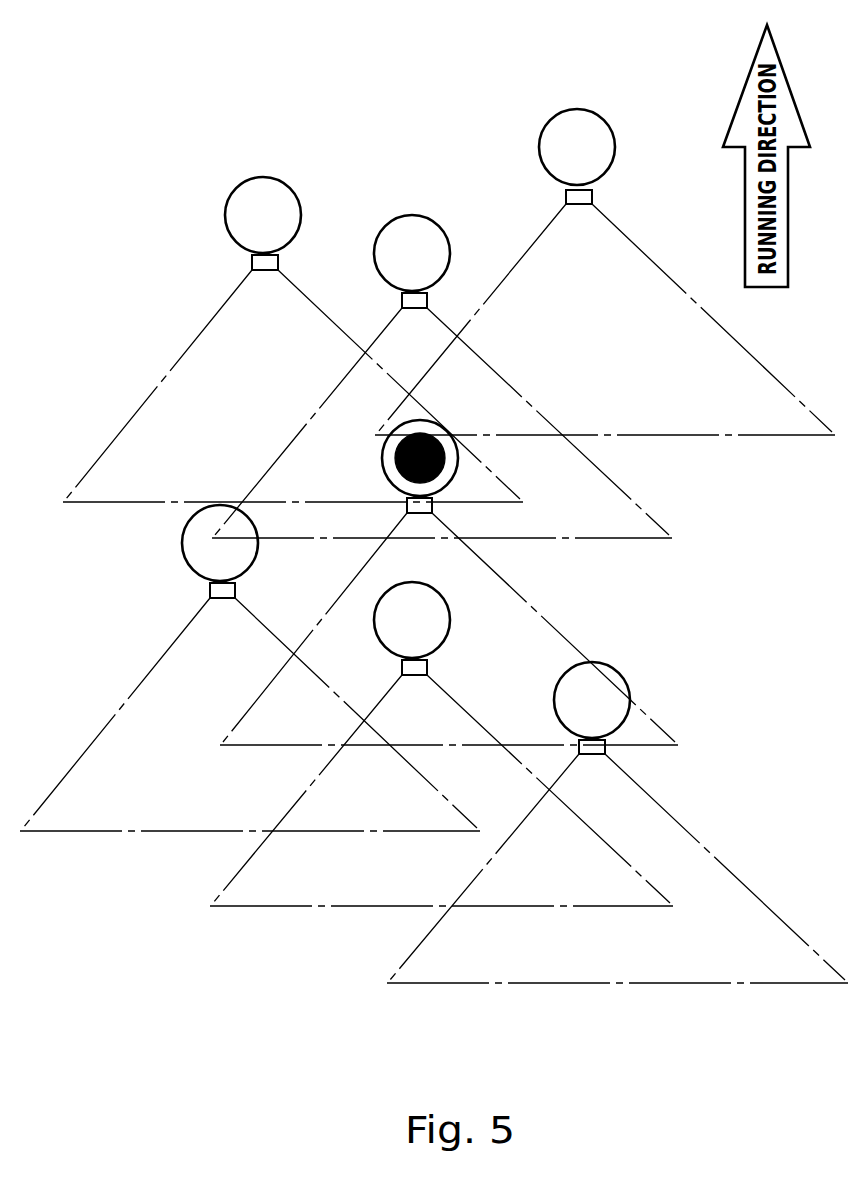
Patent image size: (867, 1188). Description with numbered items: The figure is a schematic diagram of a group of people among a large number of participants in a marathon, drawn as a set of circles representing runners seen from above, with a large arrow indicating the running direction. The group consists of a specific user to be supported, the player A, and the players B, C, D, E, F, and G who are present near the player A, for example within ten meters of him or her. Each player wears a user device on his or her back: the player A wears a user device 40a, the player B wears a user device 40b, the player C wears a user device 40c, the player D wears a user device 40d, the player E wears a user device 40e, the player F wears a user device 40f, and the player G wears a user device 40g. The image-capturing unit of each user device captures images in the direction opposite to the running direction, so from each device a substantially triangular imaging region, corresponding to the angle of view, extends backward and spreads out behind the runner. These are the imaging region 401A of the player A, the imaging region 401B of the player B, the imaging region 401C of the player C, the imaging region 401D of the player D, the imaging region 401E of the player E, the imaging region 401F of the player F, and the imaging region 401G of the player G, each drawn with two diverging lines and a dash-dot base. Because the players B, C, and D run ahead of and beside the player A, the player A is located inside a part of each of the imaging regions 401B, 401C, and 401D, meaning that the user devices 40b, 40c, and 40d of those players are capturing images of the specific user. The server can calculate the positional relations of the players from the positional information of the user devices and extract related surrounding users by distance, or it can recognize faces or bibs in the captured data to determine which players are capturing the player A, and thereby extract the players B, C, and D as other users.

The player A is at (456, 444).
The player B is at (300, 205).
The player C is at (449, 243).
The player D is at (614, 150).
The player E is at (258, 553).
The player F is at (450, 620).
The player G is at (627, 693).
The user device 40a is at (433, 505).
The user device 40b is at (279, 262).
The user device 40c is at (428, 299).
The user device 40d is at (593, 197).
The user device 40e is at (236, 590).
The user device 40f is at (428, 665).
The user device 40g is at (606, 745).
The imaging region 401A is at (505, 582).
The imaging region 401B is at (150, 398).
The imaging region 401C is at (613, 482).
The imaging region 401D is at (713, 318).
The imaging region 401E is at (273, 636).
The imaging region 401F is at (470, 715).
The imaging region 401G is at (714, 857).